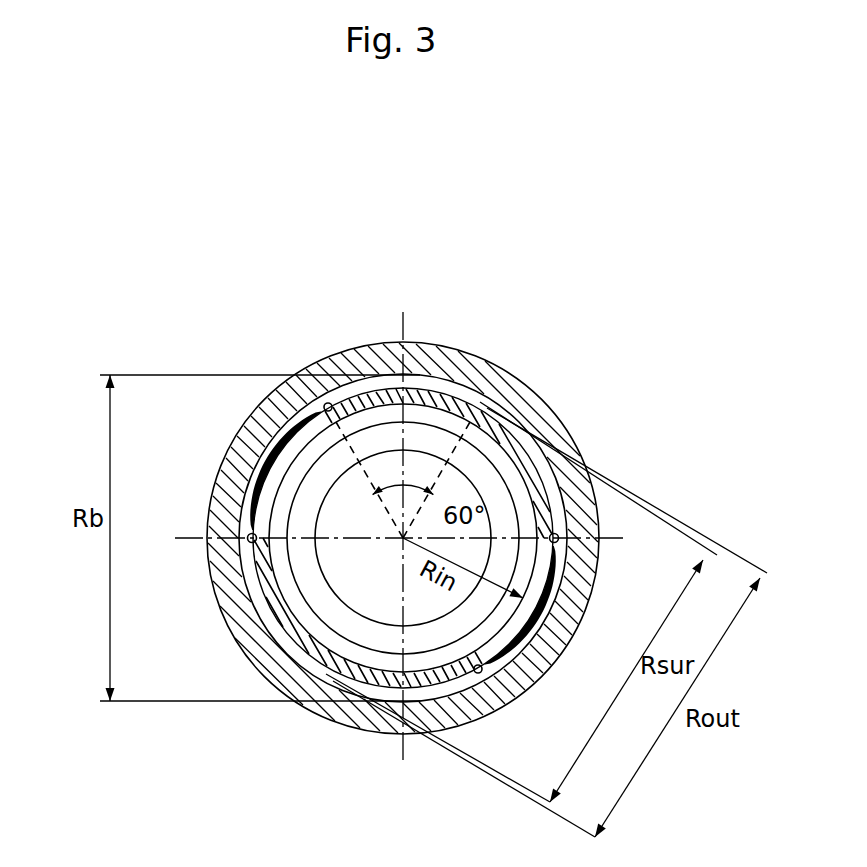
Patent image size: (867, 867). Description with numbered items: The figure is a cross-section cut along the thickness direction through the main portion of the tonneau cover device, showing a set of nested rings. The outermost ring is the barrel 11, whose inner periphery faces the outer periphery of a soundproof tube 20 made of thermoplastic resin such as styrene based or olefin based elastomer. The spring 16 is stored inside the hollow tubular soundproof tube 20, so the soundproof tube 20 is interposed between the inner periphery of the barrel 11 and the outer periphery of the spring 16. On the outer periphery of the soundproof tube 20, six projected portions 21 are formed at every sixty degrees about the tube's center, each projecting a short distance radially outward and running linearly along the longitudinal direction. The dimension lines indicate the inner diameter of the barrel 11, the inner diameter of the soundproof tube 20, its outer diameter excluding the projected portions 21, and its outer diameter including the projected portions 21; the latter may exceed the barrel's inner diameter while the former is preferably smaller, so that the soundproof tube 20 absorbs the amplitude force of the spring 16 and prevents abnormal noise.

The barrel 11 is at (357, 352).
The spring 16 is at (323, 625).
The soundproof tube 20 is at (547, 582).
The projected portions 21 is at (467, 415).